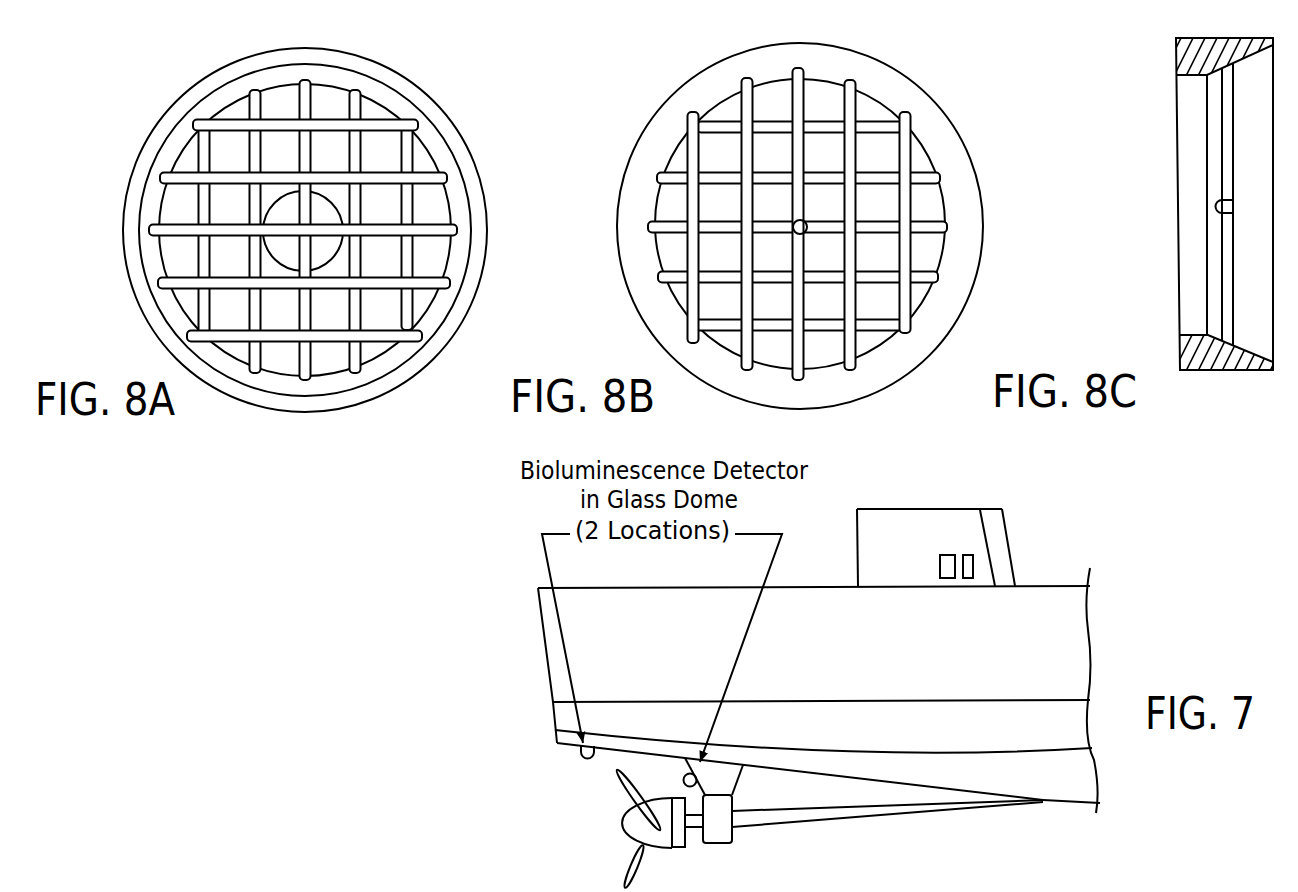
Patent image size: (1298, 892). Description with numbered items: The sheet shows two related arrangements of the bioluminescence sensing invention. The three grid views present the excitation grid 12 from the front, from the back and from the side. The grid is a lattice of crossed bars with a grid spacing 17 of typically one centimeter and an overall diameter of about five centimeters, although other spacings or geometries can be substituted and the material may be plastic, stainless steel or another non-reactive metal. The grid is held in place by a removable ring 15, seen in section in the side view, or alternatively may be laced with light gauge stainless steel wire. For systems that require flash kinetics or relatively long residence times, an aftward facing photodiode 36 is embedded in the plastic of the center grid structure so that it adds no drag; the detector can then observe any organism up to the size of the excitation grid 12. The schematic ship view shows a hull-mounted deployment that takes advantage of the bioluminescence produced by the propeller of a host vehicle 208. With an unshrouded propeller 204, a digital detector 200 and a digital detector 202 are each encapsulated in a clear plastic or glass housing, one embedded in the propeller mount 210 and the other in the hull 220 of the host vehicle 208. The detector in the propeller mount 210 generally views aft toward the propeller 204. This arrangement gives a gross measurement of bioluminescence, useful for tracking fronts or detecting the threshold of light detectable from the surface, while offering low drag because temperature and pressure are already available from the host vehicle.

In FIG. 8A, the excitation grid 12 is at (455, 110).
In FIG. 8B, the excitation grid 12 is at (827, 226).
In FIG. 8B, the grid spacing 17 is at (725, 158).
In FIG. 8C, the removable ring 15 is at (1237, 370).
In FIG. 8C, the aftward facing photodiode 36 is at (1215, 205).
In FIG. 7, the digital detector 200 is at (688, 778).
In FIG. 7, the digital detector 202 is at (578, 762).
In FIG. 7, the unshrouded propeller 204 is at (622, 838).
In FIG. 7, the host vehicle 208 is at (995, 657).
In FIG. 7, the propeller mount 210 is at (725, 785).
In FIG. 7, the hull 220 is at (555, 737).